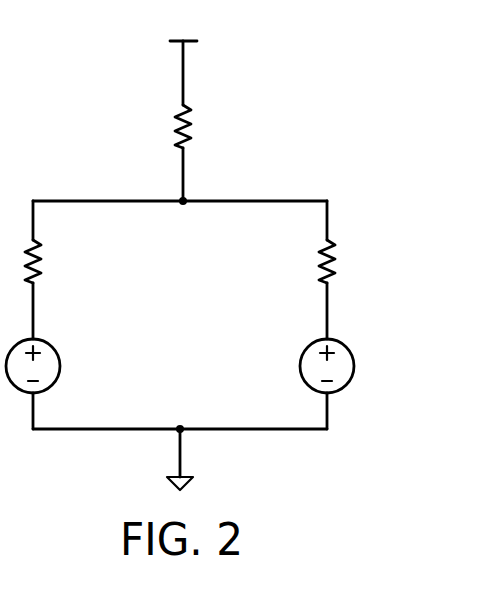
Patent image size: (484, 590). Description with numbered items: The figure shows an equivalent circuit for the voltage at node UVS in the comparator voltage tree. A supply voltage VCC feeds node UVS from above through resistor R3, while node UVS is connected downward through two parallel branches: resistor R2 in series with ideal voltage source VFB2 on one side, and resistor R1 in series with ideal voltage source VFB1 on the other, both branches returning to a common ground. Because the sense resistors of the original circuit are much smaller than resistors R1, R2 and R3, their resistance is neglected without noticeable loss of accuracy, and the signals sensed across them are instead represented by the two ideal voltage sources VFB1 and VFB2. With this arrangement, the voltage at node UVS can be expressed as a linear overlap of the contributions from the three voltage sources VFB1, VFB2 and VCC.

The supply voltage source VCC is at (182, 59).
The resistor R3 is at (197, 133).
The node UVS is at (180, 194).
The resistor R2 is at (50, 252).
The resistor R1 is at (345, 251).
The ideal voltage source VFB2 is at (108, 382).
The ideal voltage source VFB1 is at (355, 368).